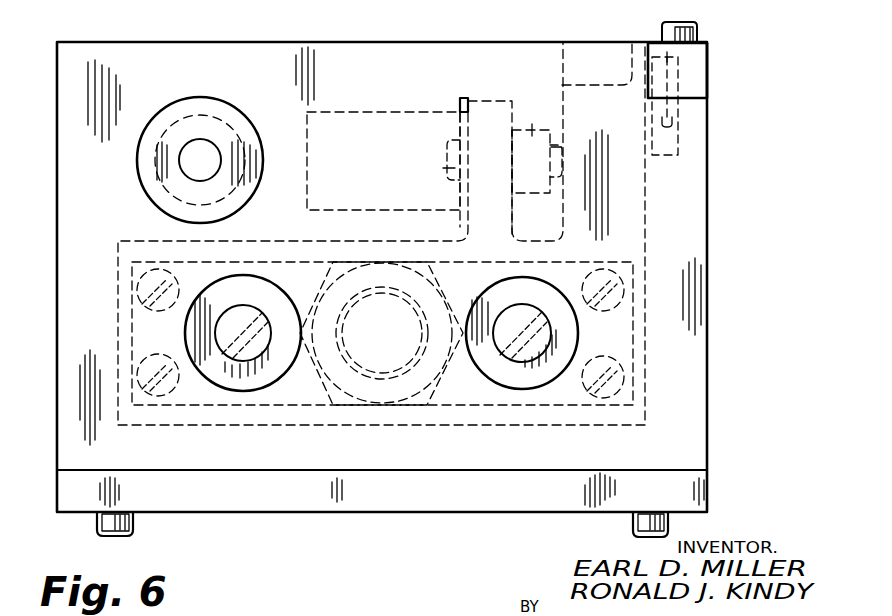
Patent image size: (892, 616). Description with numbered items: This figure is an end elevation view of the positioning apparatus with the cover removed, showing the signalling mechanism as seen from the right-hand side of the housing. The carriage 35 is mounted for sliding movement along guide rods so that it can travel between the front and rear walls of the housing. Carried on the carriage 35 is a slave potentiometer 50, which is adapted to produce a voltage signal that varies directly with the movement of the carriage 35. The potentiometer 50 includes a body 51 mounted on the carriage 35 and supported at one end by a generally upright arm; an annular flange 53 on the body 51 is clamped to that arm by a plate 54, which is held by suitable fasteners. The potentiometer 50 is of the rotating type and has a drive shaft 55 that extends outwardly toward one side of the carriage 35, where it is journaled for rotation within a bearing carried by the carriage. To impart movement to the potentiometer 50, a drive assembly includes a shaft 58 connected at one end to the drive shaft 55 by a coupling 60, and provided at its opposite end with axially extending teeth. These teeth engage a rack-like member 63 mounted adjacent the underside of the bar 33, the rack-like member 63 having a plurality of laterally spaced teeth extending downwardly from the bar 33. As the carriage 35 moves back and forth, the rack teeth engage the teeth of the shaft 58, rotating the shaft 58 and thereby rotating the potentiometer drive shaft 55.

The bar 33 is at (698, 63).
The carriage 35 is at (130, 243).
The slave potentiometer 50 is at (303, 125).
The body 51 is at (382, 122).
The annular flange 53 is at (471, 97).
The plate 54 is at (465, 97).
The drive shaft 55 is at (455, 168).
The shaft 58 is at (557, 43).
The coupling 60 is at (532, 128).
The rack-like member 63 is at (680, 135).